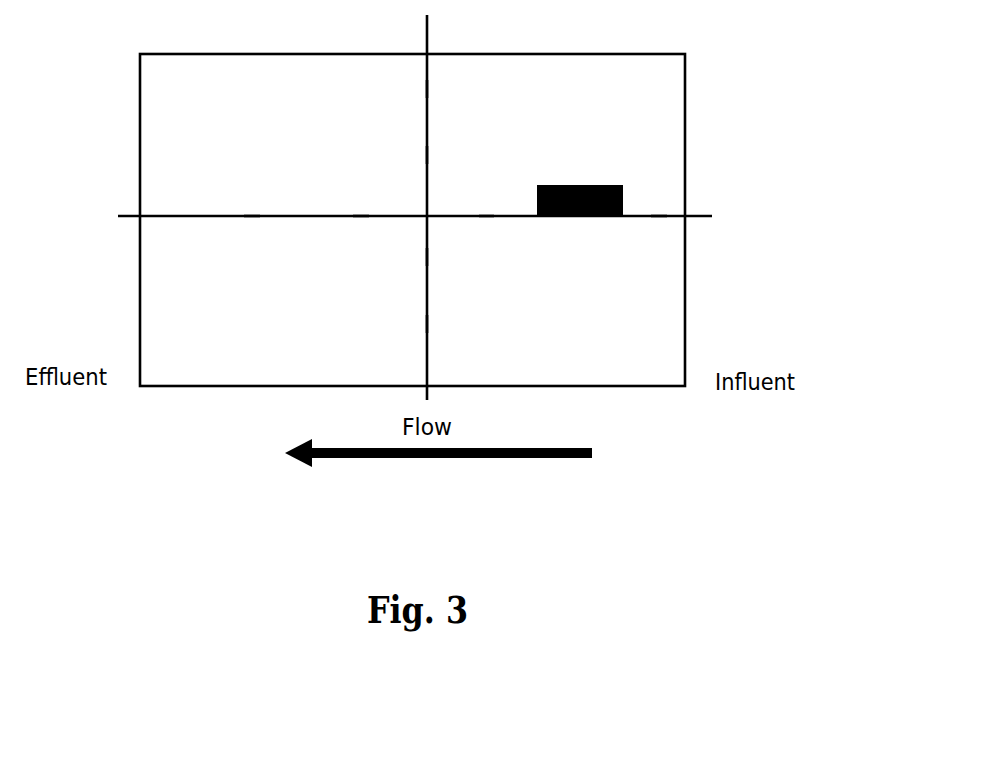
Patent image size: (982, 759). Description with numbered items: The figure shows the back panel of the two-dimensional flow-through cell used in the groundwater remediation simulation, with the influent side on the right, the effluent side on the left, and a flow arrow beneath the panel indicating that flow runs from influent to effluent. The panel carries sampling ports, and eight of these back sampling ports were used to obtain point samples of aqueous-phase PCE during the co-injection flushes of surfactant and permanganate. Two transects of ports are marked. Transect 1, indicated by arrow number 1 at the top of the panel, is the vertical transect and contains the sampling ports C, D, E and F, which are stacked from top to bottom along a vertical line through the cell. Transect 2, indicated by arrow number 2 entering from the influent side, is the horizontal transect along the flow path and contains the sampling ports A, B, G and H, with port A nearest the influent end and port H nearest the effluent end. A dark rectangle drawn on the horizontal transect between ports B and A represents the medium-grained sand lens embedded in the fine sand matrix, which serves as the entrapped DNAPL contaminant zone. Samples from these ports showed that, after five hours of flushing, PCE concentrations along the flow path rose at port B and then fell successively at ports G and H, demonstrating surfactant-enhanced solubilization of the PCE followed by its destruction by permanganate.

The transect 1 is at (450, 26).
The transect 2 is at (755, 219).
The sampling port A is at (659, 207).
The sampling port B is at (486, 207).
The sampling port C is at (426, 89).
The sampling port D is at (427, 155).
The sampling port E is at (426, 257).
The sampling port F is at (425, 324).
The sampling port G is at (360, 207).
The sampling port H is at (251, 207).